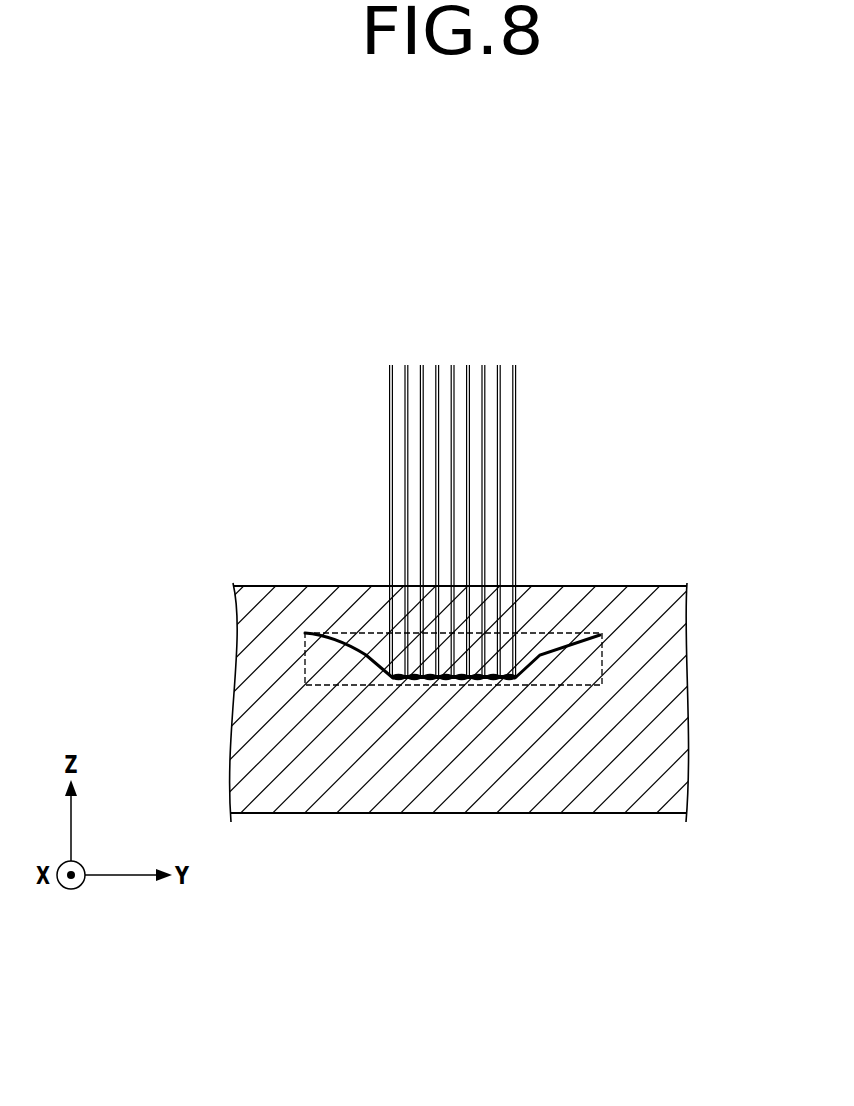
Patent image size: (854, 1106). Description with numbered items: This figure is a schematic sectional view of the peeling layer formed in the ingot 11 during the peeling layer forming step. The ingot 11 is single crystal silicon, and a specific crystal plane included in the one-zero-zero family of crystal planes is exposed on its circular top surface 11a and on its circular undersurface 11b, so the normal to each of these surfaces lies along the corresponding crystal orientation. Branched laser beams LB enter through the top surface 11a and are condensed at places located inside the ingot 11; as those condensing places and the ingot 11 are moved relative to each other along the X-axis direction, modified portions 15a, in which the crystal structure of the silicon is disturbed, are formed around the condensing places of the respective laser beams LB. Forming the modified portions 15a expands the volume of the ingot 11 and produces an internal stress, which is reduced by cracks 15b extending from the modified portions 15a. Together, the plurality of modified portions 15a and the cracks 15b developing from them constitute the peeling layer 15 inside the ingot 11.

The ingot 11 is at (275, 546).
The top surface 11a is at (646, 586).
The undersurface 11b is at (652, 815).
The peeling layer 15 is at (543, 635).
The modified portions 15a is at (492, 685).
The cracks 15b is at (338, 642).
The laser beams LB is at (522, 363).